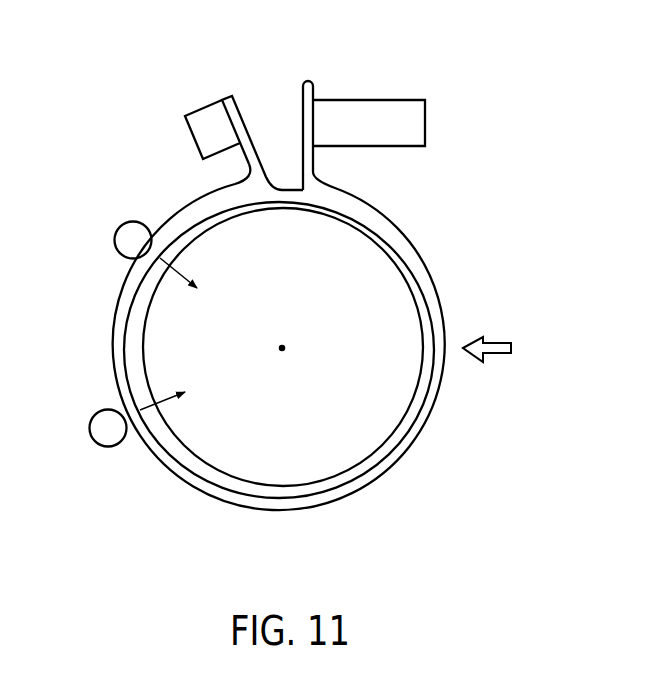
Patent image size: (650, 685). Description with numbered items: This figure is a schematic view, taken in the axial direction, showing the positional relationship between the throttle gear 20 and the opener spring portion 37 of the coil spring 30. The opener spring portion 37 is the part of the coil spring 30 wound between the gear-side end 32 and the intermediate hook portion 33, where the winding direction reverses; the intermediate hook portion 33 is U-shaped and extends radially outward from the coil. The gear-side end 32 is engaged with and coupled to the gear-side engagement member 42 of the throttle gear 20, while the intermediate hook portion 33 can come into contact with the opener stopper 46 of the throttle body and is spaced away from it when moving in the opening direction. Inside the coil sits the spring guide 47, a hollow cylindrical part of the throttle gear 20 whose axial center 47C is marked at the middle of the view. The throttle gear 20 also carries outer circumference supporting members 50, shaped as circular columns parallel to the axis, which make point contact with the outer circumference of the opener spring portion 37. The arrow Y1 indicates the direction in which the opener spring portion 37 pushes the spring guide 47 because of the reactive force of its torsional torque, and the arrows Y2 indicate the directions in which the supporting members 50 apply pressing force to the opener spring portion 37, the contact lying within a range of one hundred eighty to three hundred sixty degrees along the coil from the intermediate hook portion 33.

The coil spring 30 is at (410, 240).
The gear-side end 32 is at (224, 94).
The intermediate hook portion 33 is at (310, 82).
The opener spring portion 37 is at (117, 340).
The gear-side engagement member 42 is at (200, 126).
The opener stopper 46 is at (388, 118).
The spring guide 47 is at (283, 387).
The throttle gear 20 is at (272, 458).
The axial center of the spring guide 47C is at (282, 348).
The outer circumference supporting members 50 is at (122, 237).
The arrow Y1 is at (502, 348).
The arrows Y2 is at (184, 334).